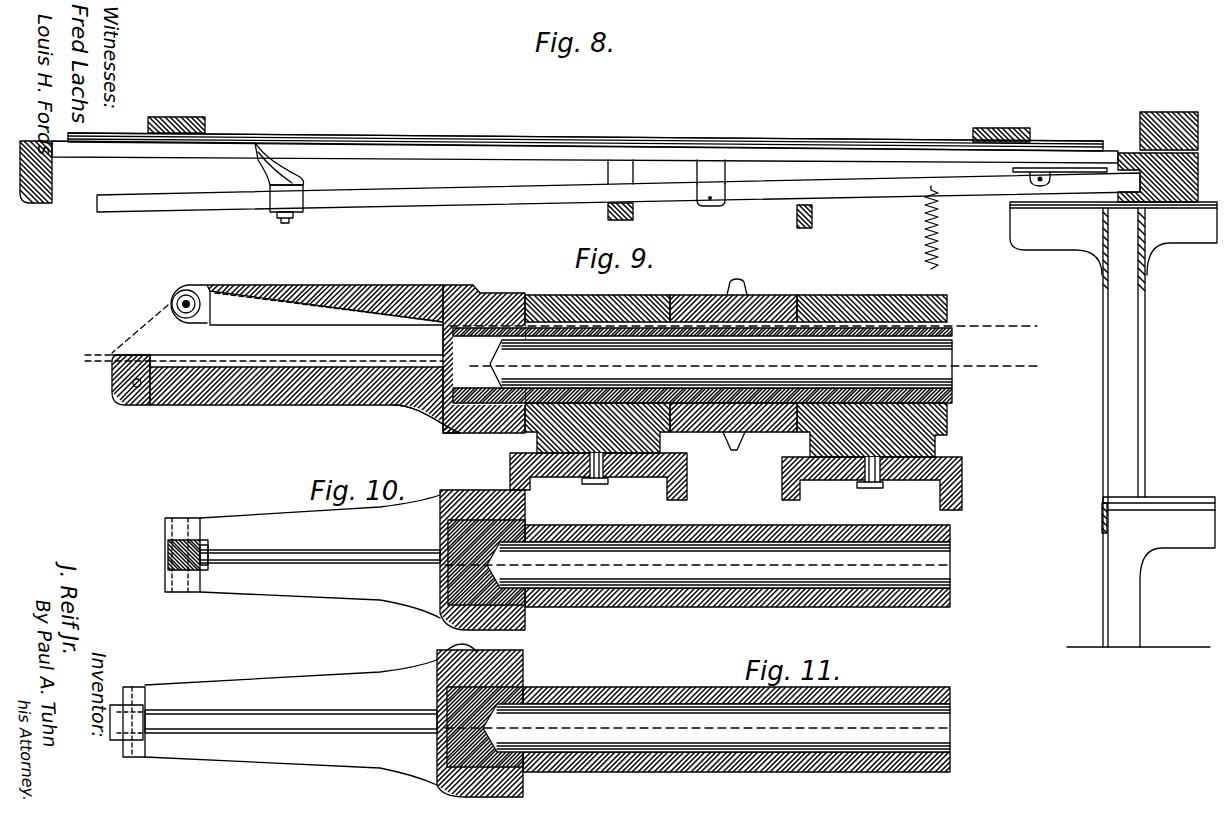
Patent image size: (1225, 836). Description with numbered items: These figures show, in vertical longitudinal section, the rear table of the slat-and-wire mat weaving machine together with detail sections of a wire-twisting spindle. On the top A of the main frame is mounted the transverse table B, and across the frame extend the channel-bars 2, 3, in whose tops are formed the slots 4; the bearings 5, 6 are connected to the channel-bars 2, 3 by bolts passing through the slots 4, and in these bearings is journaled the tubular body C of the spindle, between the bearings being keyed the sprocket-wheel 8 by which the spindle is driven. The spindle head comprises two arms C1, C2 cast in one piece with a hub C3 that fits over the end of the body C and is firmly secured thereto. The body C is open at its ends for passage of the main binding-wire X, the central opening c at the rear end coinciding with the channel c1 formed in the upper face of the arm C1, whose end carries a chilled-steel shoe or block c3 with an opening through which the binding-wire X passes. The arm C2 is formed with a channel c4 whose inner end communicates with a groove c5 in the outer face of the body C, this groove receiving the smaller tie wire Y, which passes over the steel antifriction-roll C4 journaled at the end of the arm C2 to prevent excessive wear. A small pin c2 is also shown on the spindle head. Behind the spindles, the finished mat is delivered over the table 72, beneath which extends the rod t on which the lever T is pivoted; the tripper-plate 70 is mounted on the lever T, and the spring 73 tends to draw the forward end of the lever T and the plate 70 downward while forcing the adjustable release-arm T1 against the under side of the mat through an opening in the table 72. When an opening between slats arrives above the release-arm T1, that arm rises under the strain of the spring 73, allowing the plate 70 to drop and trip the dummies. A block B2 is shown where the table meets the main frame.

In FIG. 8, the table 72 is at (708, 152).
In FIG. 8, the tripper-plate 70 is at (1047, 170).
In FIG. 8, the spring 73 is at (940, 240).
In FIG. 8, the lever T is at (507, 197).
In FIG. 8, the release-arm T1 is at (277, 168).
In FIG. 8, the rod t is at (710, 199).
In FIG. 8, the block B2 is at (1162, 122).
In FIG. 8, the transverse table B is at (1177, 190).
In FIG. 8, the top of the main frame A is at (1135, 300).
In FIG. 9, the antifriction-roll C4 is at (183, 290).
In FIG. 10, the antifriction-roll C4 is at (165, 548).
In FIG. 9, the arm C2 is at (330, 285).
In FIG. 10, the arm C2 is at (340, 592).
In FIG. 9, the hub C3 is at (500, 293).
In FIG. 10, the hub C3 is at (463, 492).
In FIG. 11, the hub C3 is at (528, 668).
In FIG. 9, the channel c4 is at (295, 315).
In FIG. 9, the channel c1 is at (215, 356).
In FIG. 10, the channel c1 is at (290, 580).
In FIG. 11, the channel c1 is at (352, 728).
In FIG. 9, the shoe or block c3 is at (112, 380).
In FIG. 9, the pin c2 is at (128, 405).
In FIG. 11, the pin c2 is at (145, 740).
In FIG. 9, the arm C1 is at (300, 415).
In FIG. 9, the central opening c is at (440, 425).
In FIG. 10, the central opening c is at (440, 585).
In FIG. 11, the central opening c is at (437, 760).
In FIG. 9, the tubular body C is at (950, 400).
In FIG. 10, the tubular body C is at (692, 605).
In FIG. 11, the tubular body C is at (865, 692).
In FIG. 9, the bearing 5 is at (632, 300).
In FIG. 9, the bearing 6 is at (754, 359).
In FIG. 9, the sprocket-wheel 8 is at (745, 280).
In FIG. 9, the groove c5 is at (875, 300).
In FIG. 9, the tie wire Y is at (1010, 328).
In FIG. 9, the main binding-wire X is at (1005, 368).
In FIG. 9, the channel-bar 2 is at (640, 477).
In FIG. 9, the slot 4 is at (590, 472).
In FIG. 9, the channel-bar 3 is at (918, 470).